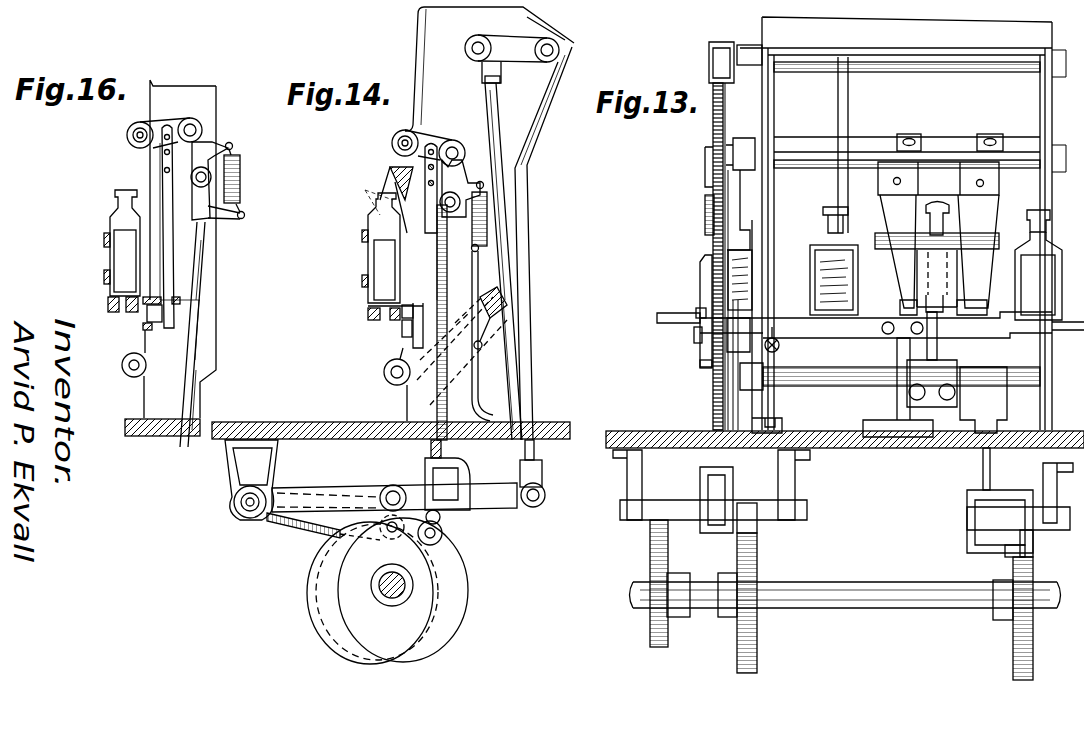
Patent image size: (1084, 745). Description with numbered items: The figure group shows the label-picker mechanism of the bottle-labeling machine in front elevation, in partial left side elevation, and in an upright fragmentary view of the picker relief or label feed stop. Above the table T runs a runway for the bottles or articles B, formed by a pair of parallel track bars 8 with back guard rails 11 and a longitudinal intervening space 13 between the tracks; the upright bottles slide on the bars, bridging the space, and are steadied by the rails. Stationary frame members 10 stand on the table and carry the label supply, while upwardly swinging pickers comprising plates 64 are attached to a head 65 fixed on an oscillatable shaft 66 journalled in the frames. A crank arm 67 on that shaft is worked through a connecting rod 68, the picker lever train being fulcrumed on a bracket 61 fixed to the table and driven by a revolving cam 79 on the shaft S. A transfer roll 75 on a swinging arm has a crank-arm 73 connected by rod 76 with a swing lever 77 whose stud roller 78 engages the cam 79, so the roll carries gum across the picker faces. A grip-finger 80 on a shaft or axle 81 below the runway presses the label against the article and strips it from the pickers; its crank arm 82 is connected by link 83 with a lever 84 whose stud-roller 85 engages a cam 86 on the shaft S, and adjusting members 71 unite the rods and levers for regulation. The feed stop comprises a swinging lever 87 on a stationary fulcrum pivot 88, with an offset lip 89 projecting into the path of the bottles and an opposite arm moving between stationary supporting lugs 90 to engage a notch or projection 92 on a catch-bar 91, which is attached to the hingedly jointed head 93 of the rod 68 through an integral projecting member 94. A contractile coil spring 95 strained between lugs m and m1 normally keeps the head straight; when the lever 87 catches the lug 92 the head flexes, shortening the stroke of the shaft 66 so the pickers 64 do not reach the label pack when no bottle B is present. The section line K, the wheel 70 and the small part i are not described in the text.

In FIG. 16, the track bars 8 is at (108, 305).
In FIG. 14, the track bars 8 is at (366, 318).
In FIG. 13, the track bars 8 is at (698, 318).
In FIG. 14, the stationary frame members 10 is at (489, 69).
In FIG. 13, the stationary frame members 10 is at (764, 110).
In FIG. 16, the back guard rails 11 is at (106, 240).
In FIG. 14, the back guard rails 11 is at (365, 243).
In FIG. 14, the intervening space 13 is at (368, 310).
In FIG. 14, the bracket 61 is at (240, 503).
In FIG. 13, the pickers 64 is at (900, 278).
In FIG. 14, the head 65 is at (392, 167).
In FIG. 13, the head 65 is at (938, 237).
In FIG. 16, the oscillatable shaft 66 is at (127, 136).
In FIG. 14, the oscillatable shaft 66 is at (407, 142).
In FIG. 13, the oscillatable shaft 66 is at (814, 163).
In FIG. 16, the crank arm 67 is at (147, 148).
In FIG. 14, the crank arm 67 is at (418, 150).
In FIG. 13, the crank arm 67 is at (741, 142).
In FIG. 16, the connecting rod 68 is at (198, 332).
In FIG. 14, the connecting rod 68 is at (450, 386).
In FIG. 13, the connecting rod 68 is at (714, 381).
In FIG. 14, the gear wheel 70 is at (462, 560).
In FIG. 13, the gear wheel 70 is at (652, 554).
In FIG. 14, the adjusting members 71 is at (460, 476).
In FIG. 13, the adjusting members 71 is at (970, 530).
In FIG. 14, the crank-arm 73 is at (512, 59).
In FIG. 13, the crank-arm 73 is at (735, 49).
In FIG. 13, the transfer-roll 75 is at (885, 240).
In FIG. 14, the rod 76 is at (530, 370).
In FIG. 13, the rod 76 is at (716, 395).
In FIG. 14, the swing lever 77 is at (488, 500).
In FIG. 13, the swing lever 77 is at (697, 498).
In FIG. 14, the stud roller 78 is at (393, 490).
In FIG. 13, the stud roller 78 is at (757, 520).
In FIG. 14, the revolving cam 79 is at (318, 603).
In FIG. 13, the revolving cam 79 is at (757, 630).
In FIG. 14, the grip-finger 80 is at (503, 320).
In FIG. 13, the grip-finger 80 is at (945, 336).
In FIG. 16, the shaft or axle 81 is at (134, 377).
In FIG. 14, the shaft or axle 81 is at (392, 385).
In FIG. 13, the shaft or axle 81 is at (846, 386).
In FIG. 13, the crank arm 82 is at (977, 400).
In FIG. 14, the rod 83 is at (433, 452).
In FIG. 13, the rod 83 is at (985, 478).
In FIG. 14, the lever 84 is at (325, 522).
In FIG. 13, the lever 84 is at (1000, 555).
In FIG. 13, the stud-roller 85 is at (1035, 546).
In FIG. 14, the cam 86 is at (458, 618).
In FIG. 13, the cam 86 is at (1020, 630).
In FIG. 16, the swinging lever 87 is at (146, 315).
In FIG. 14, the swinging lever 87 is at (402, 312).
In FIG. 13, the swinging lever 87 is at (833, 328).
In FIG. 13, the fulcrum pivot 88 is at (897, 325).
In FIG. 13, the offset lip 89 is at (1048, 320).
In FIG. 16, the supporting lugs 90 is at (145, 329).
In FIG. 14, the supporting lugs 90 is at (402, 330).
In FIG. 13, the supporting lugs 90 is at (703, 312).
In FIG. 16, the catch-bar 91 is at (165, 267).
In FIG. 14, the catch-bar 91 is at (425, 230).
In FIG. 13, the catch-bar 91 is at (708, 283).
In FIG. 16, the notch or projection 92 is at (154, 326).
In FIG. 14, the notch or projection 92 is at (413, 345).
In FIG. 13, the notch or projection 92 is at (702, 365).
In FIG. 16, the hingedly jointed head 93 is at (197, 150).
In FIG. 14, the hingedly jointed head 93 is at (450, 175).
In FIG. 13, the hingedly jointed head 93 is at (705, 192).
In FIG. 16, the projecting member 94 is at (178, 128).
In FIG. 14, the projecting member 94 is at (440, 150).
In FIG. 16, the contractile coil spring 95 is at (241, 182).
In FIG. 14, the contractile coil spring 95 is at (490, 214).
In FIG. 13, the contractile coil spring 95 is at (708, 221).
In FIG. 16, the bottles or articles B is at (125, 228).
In FIG. 14, the bottles or articles B is at (369, 248).
In FIG. 13, the bottles or articles B is at (1048, 265).
In FIG. 14, the section line K is at (350, 197).
In FIG. 14, the shaft S is at (392, 599).
In FIG. 13, the shaft S is at (845, 609).
In FIG. 16, the table T is at (162, 427).
In FIG. 14, the table T is at (391, 420).
In FIG. 13, the table T is at (845, 427).
In FIG. 16, the projecting lugs m is at (236, 146).
In FIG. 14, the projecting lugs m is at (483, 185).
In FIG. 16, the spring hook m1 is at (244, 215).
In FIG. 14, the spring hook m1 is at (481, 248).
In FIG. 13, the set screw i is at (777, 347).